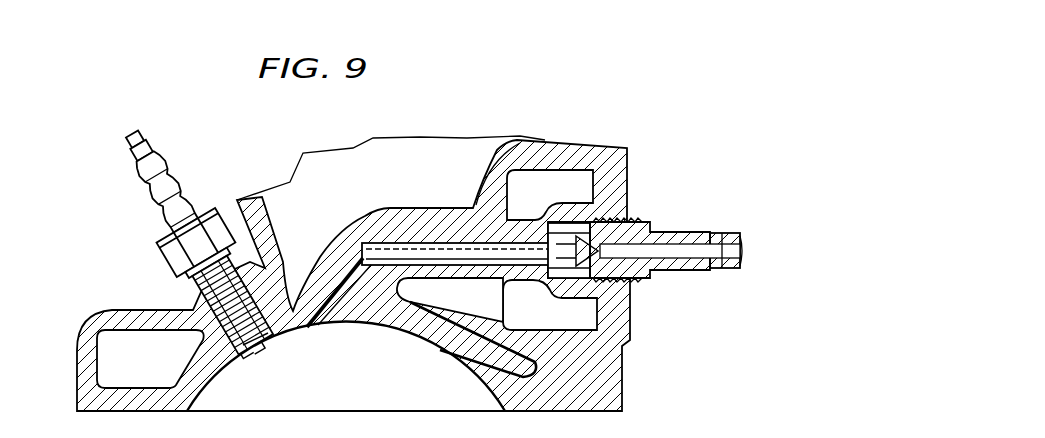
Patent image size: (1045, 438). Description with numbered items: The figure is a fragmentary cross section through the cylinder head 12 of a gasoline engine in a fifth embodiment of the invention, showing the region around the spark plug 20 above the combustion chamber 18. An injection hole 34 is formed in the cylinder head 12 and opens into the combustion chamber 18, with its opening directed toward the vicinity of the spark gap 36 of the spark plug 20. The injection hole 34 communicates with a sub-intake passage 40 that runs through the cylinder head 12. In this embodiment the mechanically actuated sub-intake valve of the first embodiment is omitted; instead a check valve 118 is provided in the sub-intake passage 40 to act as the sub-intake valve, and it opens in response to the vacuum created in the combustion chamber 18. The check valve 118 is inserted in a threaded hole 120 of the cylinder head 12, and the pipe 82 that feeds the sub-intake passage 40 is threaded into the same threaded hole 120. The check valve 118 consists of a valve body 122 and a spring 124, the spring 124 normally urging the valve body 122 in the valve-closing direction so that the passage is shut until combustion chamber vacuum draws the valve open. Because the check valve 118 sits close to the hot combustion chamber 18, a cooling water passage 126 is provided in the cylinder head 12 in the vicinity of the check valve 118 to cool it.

The cylinder head 12 is at (133, 306).
The combustion chamber 18 is at (405, 392).
The spark plug 20 is at (165, 260).
The injection hole 34 is at (345, 284).
The spark gap 36 is at (262, 350).
The sub-intake passage 40 is at (418, 247).
The pipe 82 is at (706, 234).
The check valve 118 is at (604, 288).
The threaded hole 120 is at (550, 297).
The valve body 122 is at (625, 234).
The spring 124 is at (565, 238).
The cooling water passage 126 is at (567, 172).